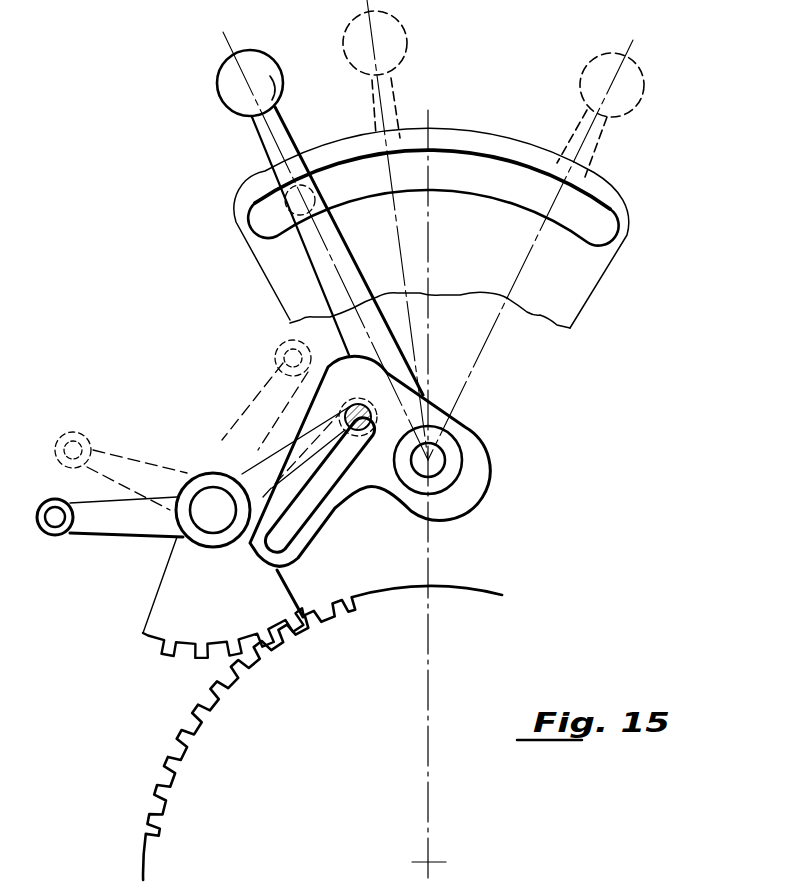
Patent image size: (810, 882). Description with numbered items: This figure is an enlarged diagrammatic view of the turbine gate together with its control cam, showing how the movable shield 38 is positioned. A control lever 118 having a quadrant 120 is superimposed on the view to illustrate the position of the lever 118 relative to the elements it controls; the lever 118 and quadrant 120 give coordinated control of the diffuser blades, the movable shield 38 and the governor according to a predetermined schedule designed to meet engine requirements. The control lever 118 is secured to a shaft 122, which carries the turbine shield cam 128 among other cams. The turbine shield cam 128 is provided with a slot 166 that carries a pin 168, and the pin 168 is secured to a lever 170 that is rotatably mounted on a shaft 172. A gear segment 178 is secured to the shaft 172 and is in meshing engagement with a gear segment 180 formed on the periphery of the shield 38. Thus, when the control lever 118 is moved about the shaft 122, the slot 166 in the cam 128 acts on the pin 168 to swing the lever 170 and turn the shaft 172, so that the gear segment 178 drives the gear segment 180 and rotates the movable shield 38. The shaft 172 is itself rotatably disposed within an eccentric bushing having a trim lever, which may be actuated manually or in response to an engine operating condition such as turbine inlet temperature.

The movable shield 38 is at (301, 718).
The control lever 118 is at (227, 72).
The quadrant 120 is at (272, 283).
The shaft 122 is at (445, 455).
The turbine shield cam 128 is at (468, 478).
The slot 166 is at (290, 517).
The pin 168 is at (372, 405).
The lever 170 is at (272, 452).
The shaft 172 is at (228, 521).
The gear segment 178 is at (240, 610).
The gear segment 180 is at (207, 690).